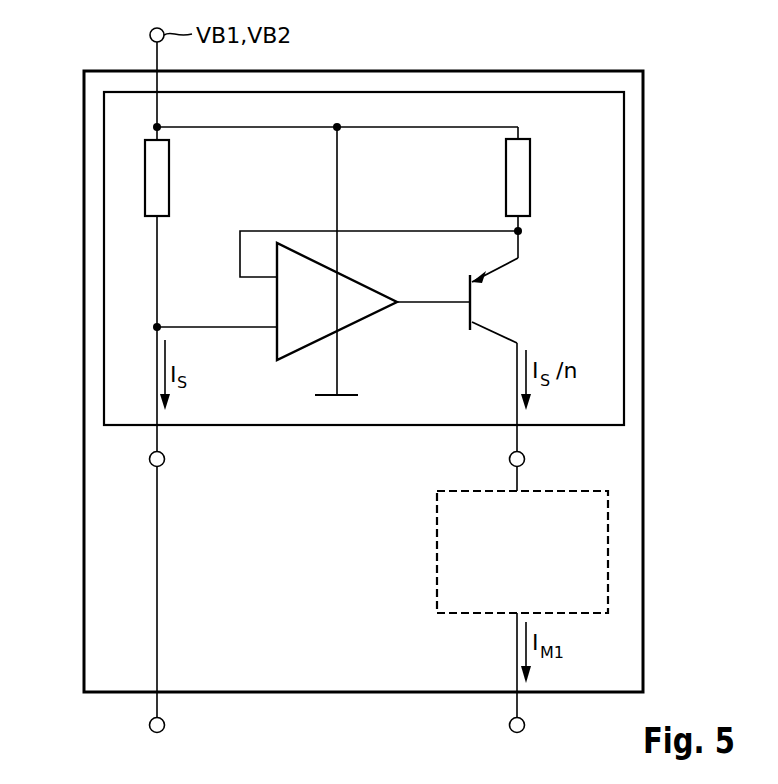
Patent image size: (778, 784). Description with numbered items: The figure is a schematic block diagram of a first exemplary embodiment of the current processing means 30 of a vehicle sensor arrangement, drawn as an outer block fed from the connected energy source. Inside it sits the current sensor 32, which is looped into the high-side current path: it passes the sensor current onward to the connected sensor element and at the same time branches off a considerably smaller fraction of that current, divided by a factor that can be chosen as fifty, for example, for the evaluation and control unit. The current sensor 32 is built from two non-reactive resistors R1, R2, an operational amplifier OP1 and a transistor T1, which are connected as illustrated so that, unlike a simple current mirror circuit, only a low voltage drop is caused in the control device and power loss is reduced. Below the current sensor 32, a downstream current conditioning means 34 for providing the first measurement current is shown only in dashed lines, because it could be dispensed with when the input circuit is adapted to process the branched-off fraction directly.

The current processing means 30 is at (495, 71).
The current sensor 32 is at (104, 254).
The current conditioning means 34 is at (437, 553).
The non-reactive resistor R1 is at (173, 178).
The non-reactive resistor R2 is at (534, 177).
The operational amplifier OP1 is at (379, 261).
The transistor T1 is at (494, 300).